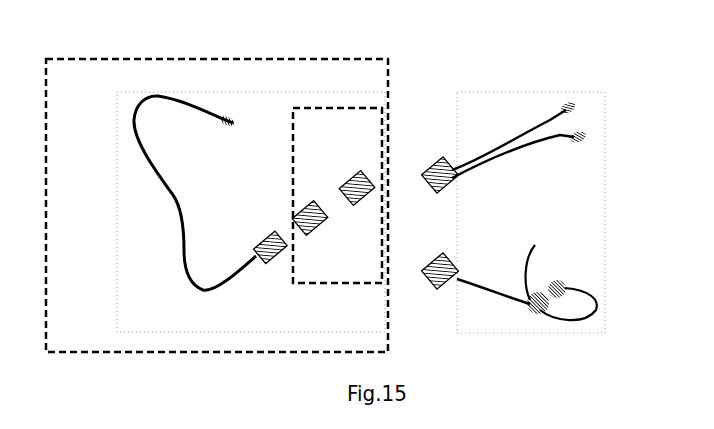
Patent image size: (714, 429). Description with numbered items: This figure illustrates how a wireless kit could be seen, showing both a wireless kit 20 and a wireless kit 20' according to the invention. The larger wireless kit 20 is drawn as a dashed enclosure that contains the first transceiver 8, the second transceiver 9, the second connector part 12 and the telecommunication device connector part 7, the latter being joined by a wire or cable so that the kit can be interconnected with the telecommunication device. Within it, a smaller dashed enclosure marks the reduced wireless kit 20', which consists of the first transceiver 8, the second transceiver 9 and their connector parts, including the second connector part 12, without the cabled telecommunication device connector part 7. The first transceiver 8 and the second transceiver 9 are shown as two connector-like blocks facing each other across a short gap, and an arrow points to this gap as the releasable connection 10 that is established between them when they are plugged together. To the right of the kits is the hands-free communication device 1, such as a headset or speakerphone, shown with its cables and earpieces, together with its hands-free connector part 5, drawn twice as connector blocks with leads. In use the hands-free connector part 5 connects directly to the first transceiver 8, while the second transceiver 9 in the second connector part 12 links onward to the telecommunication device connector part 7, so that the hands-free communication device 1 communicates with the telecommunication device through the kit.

The wireless kit 20 is at (217, 181).
The wireless kit 20' is at (343, 146).
The first transceiver 8 is at (349, 155).
The second transceiver 9 is at (297, 203).
The releasable connection 10 is at (343, 206).
The telecommunication device connector part 7 is at (223, 130).
The second connector part 12 is at (278, 265).
The hands-free connector part 5 is at (442, 138).
The hands-free communication device 1 is at (553, 270).